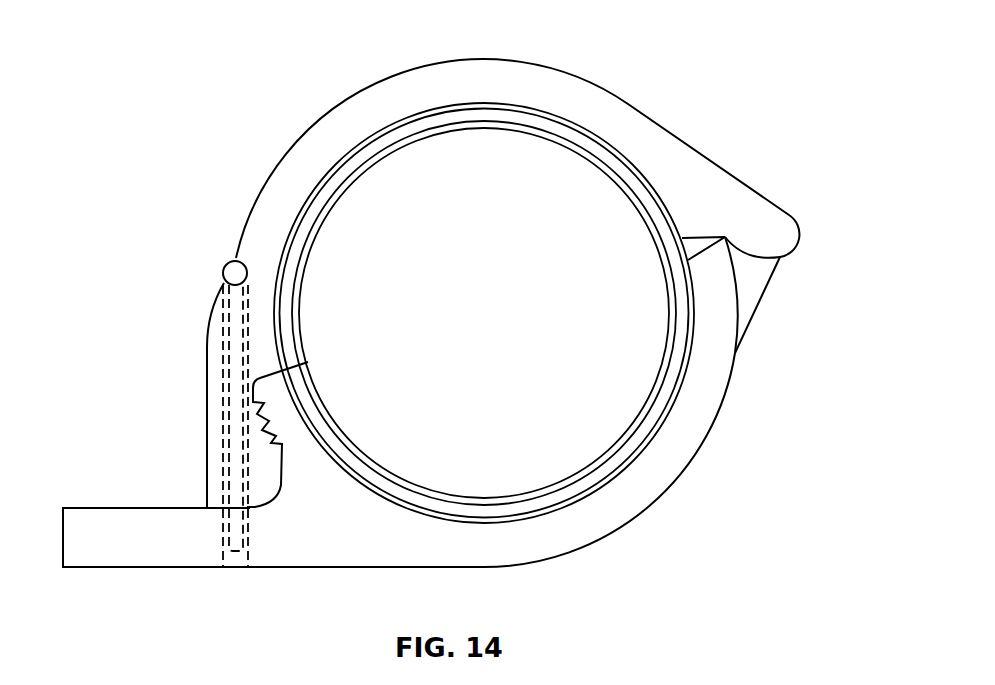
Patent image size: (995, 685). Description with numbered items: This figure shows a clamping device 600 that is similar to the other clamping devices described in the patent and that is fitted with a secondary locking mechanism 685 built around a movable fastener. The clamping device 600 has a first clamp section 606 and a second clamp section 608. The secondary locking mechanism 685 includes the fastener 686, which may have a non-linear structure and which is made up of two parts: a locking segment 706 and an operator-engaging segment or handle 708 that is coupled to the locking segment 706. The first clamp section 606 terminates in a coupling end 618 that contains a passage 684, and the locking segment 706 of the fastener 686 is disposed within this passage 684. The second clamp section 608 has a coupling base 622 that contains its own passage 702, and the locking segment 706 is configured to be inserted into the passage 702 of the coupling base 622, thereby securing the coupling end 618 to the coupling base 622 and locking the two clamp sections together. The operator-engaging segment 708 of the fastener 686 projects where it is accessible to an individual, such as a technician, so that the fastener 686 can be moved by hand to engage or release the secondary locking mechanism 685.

The clamping device 600 is at (732, 67).
The first clamp section 606 is at (557, 95).
The second clamp section 608 is at (595, 522).
The coupling end 618 is at (207, 473).
The coupling base 622 is at (213, 532).
The passage 684 is at (222, 358).
The secondary locking mechanism 685 is at (205, 255).
The fastener 686 is at (235, 272).
The passage 702 is at (235, 563).
The locking segment 706 is at (227, 418).
The operator-engaging segment 708 is at (217, 273).